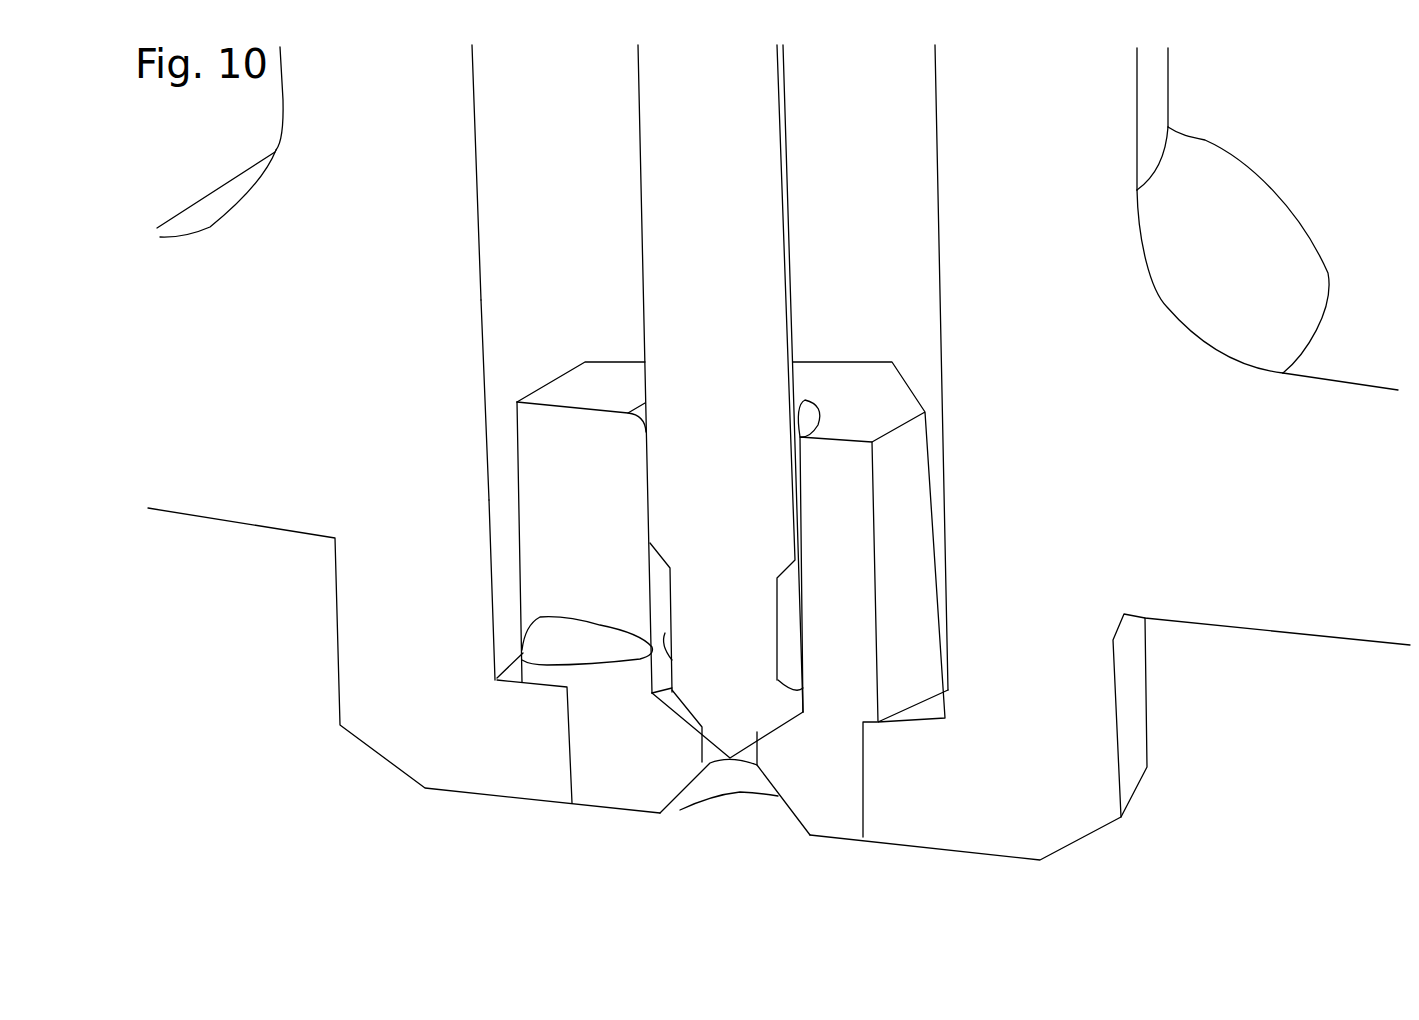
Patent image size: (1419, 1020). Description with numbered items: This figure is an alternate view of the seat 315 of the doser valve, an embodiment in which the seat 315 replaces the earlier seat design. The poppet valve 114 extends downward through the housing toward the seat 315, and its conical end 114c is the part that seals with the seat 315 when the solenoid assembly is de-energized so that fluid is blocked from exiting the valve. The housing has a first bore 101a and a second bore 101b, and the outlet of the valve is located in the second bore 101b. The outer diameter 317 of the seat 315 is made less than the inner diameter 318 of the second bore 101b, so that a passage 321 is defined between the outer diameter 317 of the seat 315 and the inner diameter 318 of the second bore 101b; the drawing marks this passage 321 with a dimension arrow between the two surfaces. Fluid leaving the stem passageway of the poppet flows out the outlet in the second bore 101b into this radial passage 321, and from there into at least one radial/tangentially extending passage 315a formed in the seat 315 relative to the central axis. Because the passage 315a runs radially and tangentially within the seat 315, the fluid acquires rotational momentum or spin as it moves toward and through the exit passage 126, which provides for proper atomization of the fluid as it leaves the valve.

The poppet valve 114 is at (682, 412).
The conical end 114c is at (727, 738).
The exit passage 126 is at (725, 782).
The outer diameter 317 is at (520, 438).
The inner diameter 318 is at (490, 287).
The first bore 101a is at (492, 518).
The second bore 101b is at (485, 328).
The passage 321 is at (521, 572).
The seat 315 is at (623, 782).
The radial/tangentially extending passage 315a is at (582, 645).